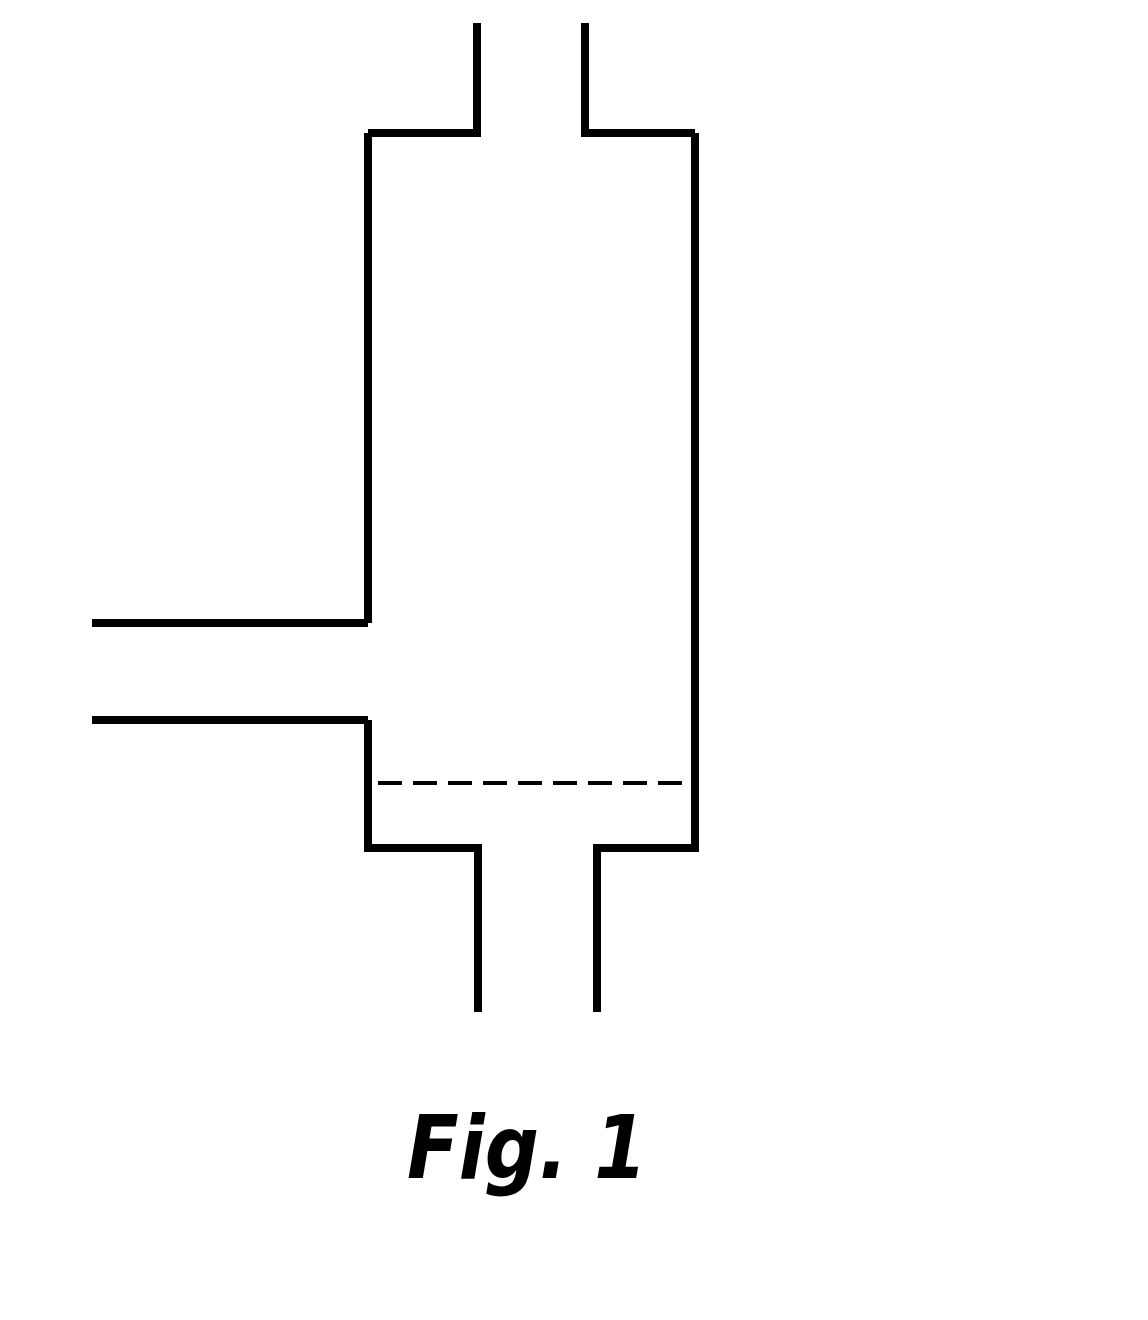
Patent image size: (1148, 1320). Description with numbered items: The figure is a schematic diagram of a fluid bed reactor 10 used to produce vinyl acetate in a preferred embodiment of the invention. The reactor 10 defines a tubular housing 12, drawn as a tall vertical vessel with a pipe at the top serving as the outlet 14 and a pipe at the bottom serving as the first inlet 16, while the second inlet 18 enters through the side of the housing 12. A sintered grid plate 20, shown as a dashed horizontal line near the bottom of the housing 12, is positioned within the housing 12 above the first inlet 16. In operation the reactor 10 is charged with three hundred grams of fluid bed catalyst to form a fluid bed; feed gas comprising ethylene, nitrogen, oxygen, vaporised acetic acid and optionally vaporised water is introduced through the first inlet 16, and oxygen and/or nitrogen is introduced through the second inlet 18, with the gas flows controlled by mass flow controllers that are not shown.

The reactor 10 is at (520, 506).
The tubular housing 12 is at (699, 277).
The outlet 14 is at (585, 85).
The first inlet 16 is at (478, 921).
The second inlet 18 is at (190, 620).
The sintered grid plate 20 is at (635, 783).